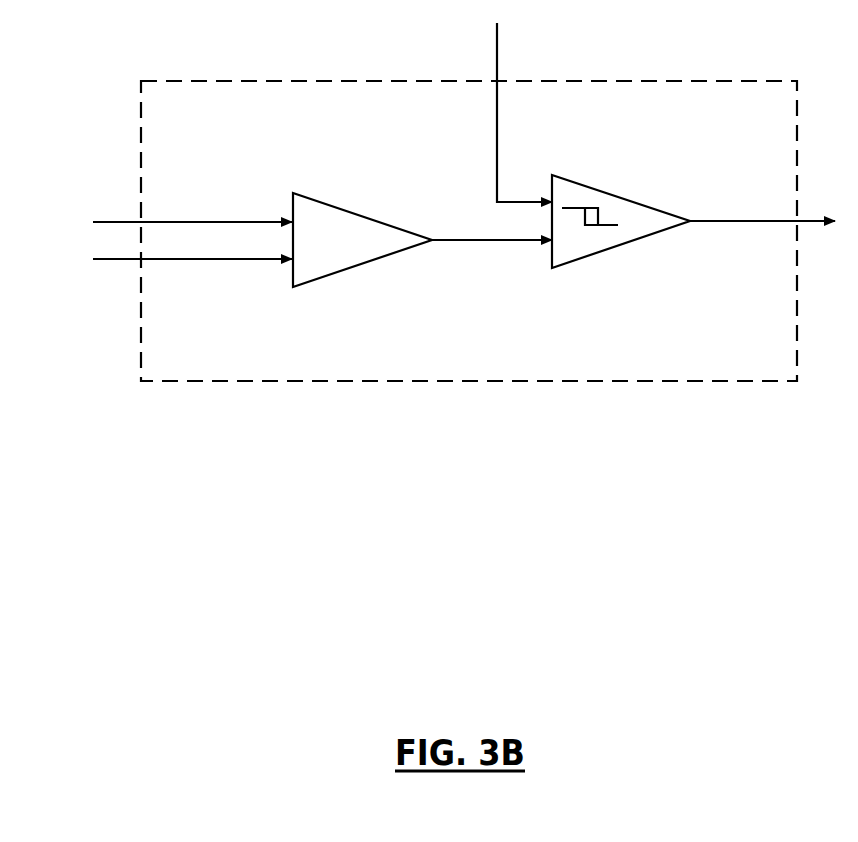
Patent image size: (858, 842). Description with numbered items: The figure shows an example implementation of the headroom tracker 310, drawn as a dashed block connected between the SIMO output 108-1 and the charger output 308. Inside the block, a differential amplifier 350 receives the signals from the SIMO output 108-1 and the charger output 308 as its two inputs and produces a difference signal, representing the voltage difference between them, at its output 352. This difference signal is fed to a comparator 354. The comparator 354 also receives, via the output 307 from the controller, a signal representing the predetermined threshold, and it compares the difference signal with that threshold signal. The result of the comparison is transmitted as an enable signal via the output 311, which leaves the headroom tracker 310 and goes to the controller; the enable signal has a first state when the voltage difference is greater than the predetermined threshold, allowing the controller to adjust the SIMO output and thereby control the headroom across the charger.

The headroom tracker 310 is at (141, 118).
The SIMO output 108-1 is at (113, 222).
The charger output 308 is at (115, 259).
The differential amplifier 350 is at (294, 194).
The output 352 is at (463, 243).
The output 307 is at (497, 60).
The comparator 354 is at (581, 183).
The output 311 is at (731, 221).